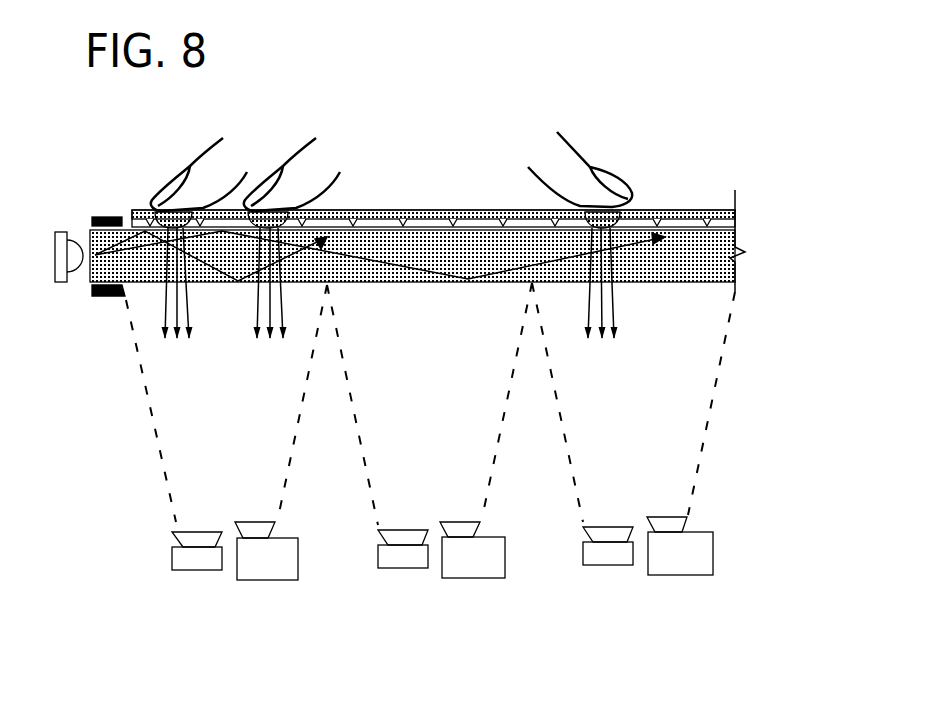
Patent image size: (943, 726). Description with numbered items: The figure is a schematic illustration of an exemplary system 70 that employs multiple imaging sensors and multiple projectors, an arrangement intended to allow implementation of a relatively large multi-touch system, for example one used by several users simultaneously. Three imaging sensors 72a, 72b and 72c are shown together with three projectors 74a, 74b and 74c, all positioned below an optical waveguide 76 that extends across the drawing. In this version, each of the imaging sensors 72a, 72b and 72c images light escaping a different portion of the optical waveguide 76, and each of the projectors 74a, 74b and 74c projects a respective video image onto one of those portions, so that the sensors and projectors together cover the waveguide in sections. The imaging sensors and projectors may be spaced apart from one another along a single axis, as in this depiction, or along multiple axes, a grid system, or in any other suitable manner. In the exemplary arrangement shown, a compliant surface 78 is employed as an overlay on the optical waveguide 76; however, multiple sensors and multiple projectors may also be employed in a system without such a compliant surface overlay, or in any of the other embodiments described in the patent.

The system 70 is at (690, 62).
The imaging sensor 72a is at (197, 560).
The imaging sensor 72b is at (402, 560).
The imaging sensor 72c is at (608, 555).
The projector 74a is at (267, 563).
The projector 74b is at (473, 562).
The projector 74c is at (680, 558).
The optical waveguide 76 is at (698, 250).
The compliant surface 78 is at (707, 208).